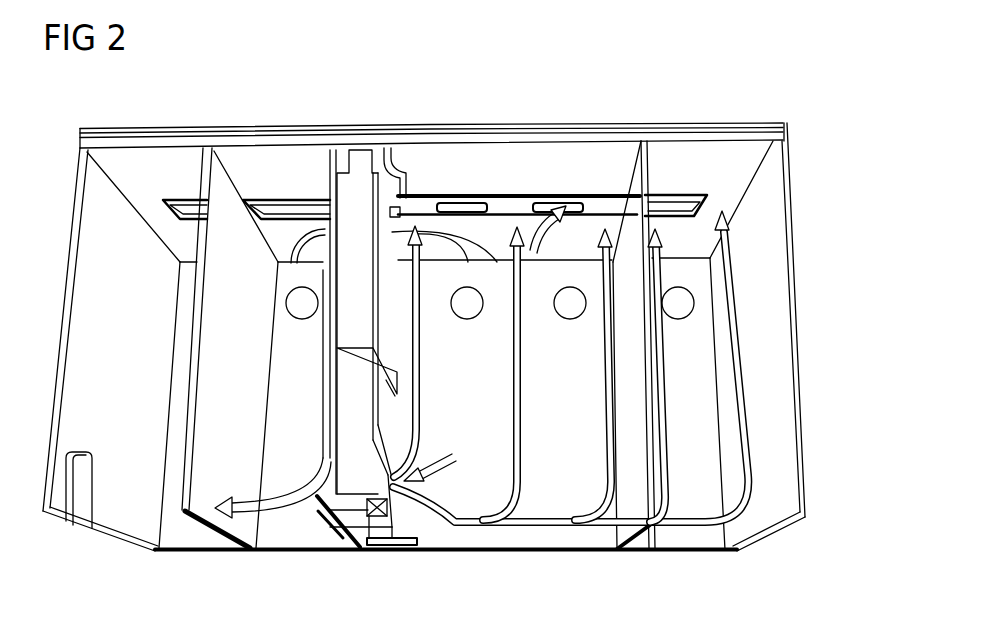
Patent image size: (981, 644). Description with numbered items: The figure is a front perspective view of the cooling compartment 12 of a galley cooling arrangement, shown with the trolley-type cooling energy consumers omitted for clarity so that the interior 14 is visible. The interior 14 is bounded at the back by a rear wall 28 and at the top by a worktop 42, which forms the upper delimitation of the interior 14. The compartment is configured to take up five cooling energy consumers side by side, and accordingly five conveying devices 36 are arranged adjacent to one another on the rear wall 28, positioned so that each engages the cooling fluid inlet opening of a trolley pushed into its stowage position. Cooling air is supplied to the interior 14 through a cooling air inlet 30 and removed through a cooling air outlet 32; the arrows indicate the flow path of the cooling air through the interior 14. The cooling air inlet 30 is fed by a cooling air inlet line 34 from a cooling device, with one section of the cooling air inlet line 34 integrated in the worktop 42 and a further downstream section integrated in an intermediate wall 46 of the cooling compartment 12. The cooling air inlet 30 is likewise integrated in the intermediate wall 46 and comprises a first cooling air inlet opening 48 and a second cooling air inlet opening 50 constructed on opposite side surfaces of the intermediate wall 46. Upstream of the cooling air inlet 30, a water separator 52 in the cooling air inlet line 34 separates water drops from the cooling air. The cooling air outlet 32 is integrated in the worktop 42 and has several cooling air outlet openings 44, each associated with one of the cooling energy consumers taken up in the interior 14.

The cooling compartment 12 is at (800, 227).
The interior 14 is at (714, 394).
The rear wall 28 is at (520, 540).
The cooling air inlet 30 is at (404, 509).
The cooling air outlet 32 is at (469, 195).
The cooling air inlet line 34 is at (311, 453).
The conveying device 36 is at (680, 302).
The worktop 42 is at (165, 155).
The cooling air outlet openings 44 is at (297, 195).
The intermediate wall 46 is at (357, 484).
The first cooling air inlet opening 48 is at (372, 518).
The second cooling air inlet opening 50 is at (318, 472).
The water separator 52 is at (330, 540).